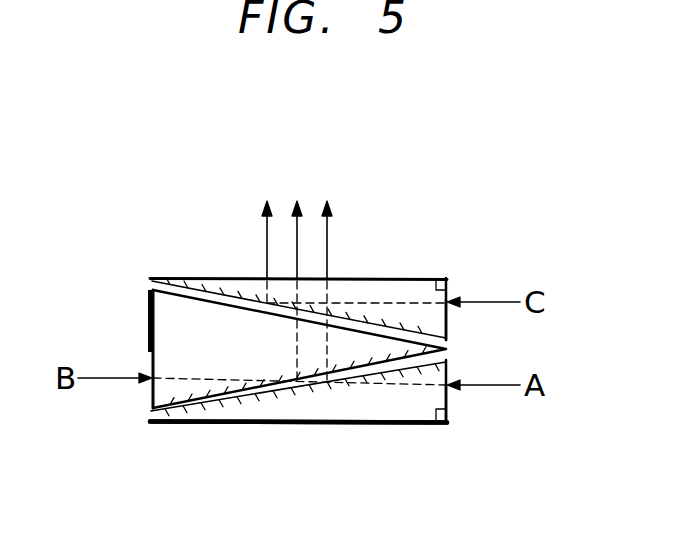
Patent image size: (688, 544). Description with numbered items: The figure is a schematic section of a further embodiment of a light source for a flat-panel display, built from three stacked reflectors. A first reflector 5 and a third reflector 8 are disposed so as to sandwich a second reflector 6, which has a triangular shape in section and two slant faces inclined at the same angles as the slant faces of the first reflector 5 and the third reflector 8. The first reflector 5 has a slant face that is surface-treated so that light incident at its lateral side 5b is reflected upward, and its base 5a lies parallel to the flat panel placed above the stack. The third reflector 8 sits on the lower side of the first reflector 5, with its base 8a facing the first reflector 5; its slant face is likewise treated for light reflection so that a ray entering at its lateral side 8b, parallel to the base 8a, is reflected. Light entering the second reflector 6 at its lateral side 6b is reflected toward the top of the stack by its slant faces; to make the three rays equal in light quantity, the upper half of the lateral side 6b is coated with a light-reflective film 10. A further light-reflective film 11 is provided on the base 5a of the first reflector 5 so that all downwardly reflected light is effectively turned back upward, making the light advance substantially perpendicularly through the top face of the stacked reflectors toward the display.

The light-reflective film 10 is at (148, 310).
The second reflector 6 is at (203, 351).
The lateral side of the second reflector 6b is at (152, 389).
The third reflector 8 is at (390, 290).
The base of the third reflector 8a is at (238, 279).
The end face of upper wedge 8b is at (447, 320).
The first reflector 5 is at (348, 408).
The base of the first reflector 5a is at (379, 414).
The lateral side of the first reflector 5b is at (447, 403).
The light-reflective film 11 is at (262, 423).